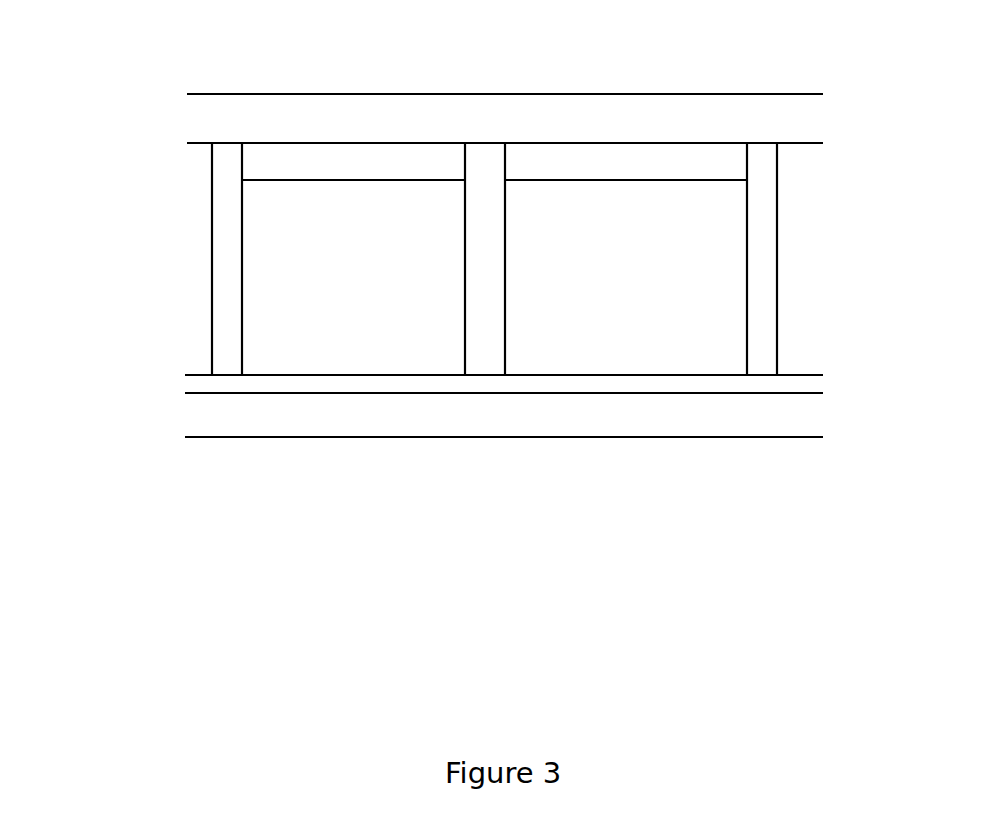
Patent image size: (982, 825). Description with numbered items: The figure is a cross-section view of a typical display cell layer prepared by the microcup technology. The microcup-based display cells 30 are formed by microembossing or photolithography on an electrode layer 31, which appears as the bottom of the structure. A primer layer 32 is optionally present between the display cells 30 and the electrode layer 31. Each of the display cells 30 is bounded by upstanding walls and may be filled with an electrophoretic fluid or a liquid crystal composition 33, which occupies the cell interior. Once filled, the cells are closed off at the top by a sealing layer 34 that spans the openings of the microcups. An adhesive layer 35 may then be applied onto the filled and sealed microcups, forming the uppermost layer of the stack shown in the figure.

The microcup-based display cells 30 is at (426, 259).
The electrode layer 31 is at (428, 448).
The primer layer 32 is at (430, 367).
The electrophoretic fluid or liquid crystal composition 33 is at (716, 310).
The sealing layer 34 is at (581, 104).
The adhesive layer 35 is at (431, 105).